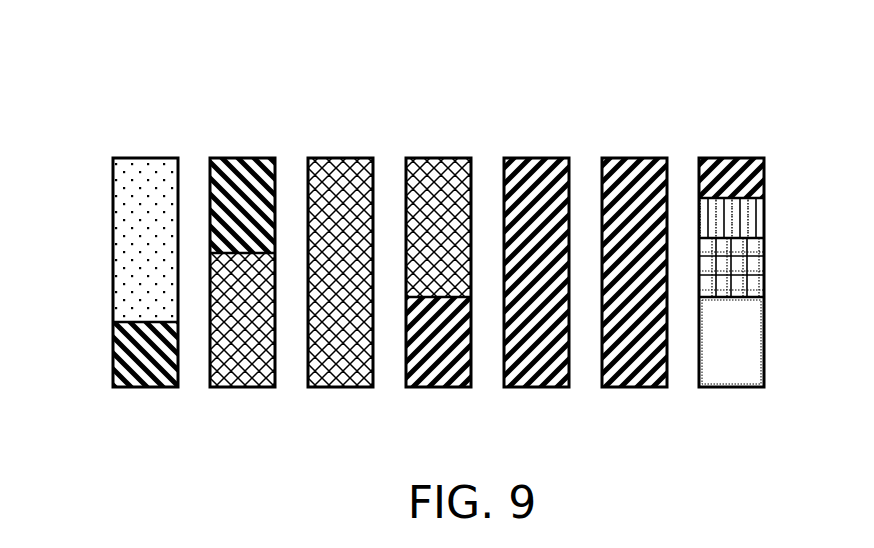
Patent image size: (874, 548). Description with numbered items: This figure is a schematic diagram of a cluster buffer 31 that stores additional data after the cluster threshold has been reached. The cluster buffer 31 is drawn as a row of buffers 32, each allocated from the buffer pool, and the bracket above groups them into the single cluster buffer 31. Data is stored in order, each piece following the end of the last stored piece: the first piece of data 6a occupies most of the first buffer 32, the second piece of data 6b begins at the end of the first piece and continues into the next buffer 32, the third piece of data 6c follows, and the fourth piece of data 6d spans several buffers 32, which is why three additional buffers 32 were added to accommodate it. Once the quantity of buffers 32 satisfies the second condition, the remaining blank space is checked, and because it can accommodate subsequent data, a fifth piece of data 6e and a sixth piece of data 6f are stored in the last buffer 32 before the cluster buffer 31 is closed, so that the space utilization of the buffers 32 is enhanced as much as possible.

The cluster buffer 31 is at (168, 80).
The buffer 32 is at (430, 285).
The first piece of data 6a is at (123, 287).
The second piece of data 6b is at (124, 368).
The third piece of data 6c is at (248, 378).
The fourth piece of data 6d is at (642, 375).
The fifth piece of data 6e is at (755, 222).
The sixth piece of data 6f is at (757, 277).